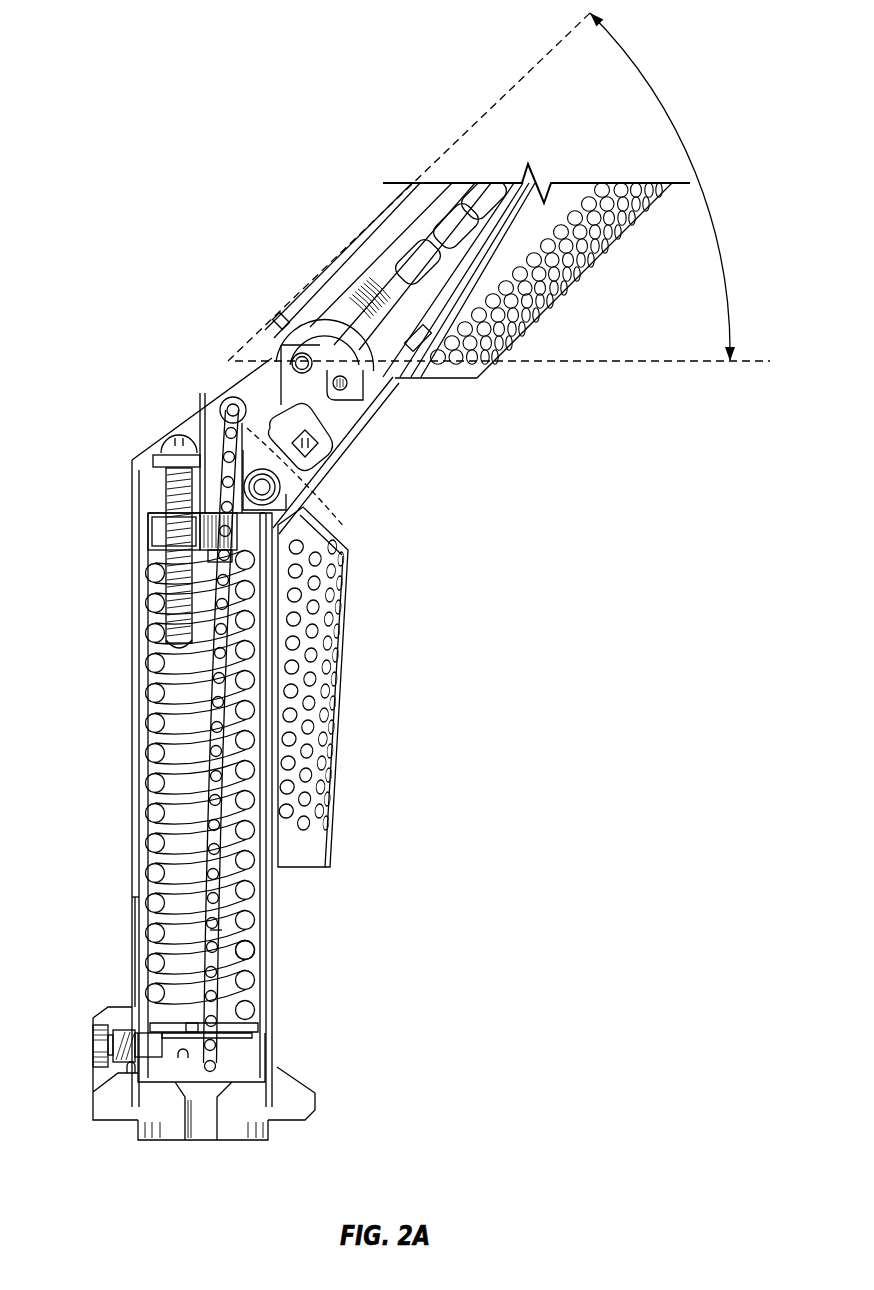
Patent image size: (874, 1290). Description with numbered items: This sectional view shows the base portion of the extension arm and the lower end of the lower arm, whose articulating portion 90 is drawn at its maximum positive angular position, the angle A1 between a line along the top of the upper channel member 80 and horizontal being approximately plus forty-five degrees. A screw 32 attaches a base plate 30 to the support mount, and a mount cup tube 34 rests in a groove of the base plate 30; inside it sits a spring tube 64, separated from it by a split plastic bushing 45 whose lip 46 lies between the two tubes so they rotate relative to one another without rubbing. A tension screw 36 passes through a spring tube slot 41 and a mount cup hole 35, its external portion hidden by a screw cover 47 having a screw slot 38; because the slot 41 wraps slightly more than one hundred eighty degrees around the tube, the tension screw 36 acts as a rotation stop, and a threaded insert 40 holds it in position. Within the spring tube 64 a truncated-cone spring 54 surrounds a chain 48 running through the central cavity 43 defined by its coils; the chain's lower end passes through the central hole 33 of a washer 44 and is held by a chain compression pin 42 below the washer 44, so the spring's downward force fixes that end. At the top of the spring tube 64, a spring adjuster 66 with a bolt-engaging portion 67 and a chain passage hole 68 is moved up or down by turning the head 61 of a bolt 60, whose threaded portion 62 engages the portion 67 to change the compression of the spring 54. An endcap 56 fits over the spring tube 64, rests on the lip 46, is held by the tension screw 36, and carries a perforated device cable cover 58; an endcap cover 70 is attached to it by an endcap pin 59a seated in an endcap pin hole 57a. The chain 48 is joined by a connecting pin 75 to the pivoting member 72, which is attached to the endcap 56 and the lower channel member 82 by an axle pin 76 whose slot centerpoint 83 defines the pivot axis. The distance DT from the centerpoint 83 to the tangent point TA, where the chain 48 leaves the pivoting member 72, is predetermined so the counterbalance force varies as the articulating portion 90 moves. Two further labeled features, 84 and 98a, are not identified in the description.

The articulating portion 90 is at (331, 196).
The upper channel member 80 is at (337, 275).
The perforated screen 84 is at (533, 301).
The lower channel member 82 is at (391, 372).
The pivot pin 98a is at (298, 356).
The pivoting member 72 is at (268, 356).
The endcap cover 70 is at (281, 378).
The connecting pin 75 is at (232, 408).
The tangent point TA is at (231, 428).
The head 61 is at (163, 446).
The bolt 60 is at (168, 472).
The bolt-engaging portion 67 is at (166, 522).
The spring adjuster 66 is at (150, 540).
The threaded portion 62 is at (155, 586).
The spring 54 is at (248, 956).
The endcap 56 is at (133, 640).
The spring tube 64 is at (146, 692).
The lip 46 is at (133, 896).
The bushing 45 is at (134, 918).
The central cavity 43 is at (229, 740).
The chain 48 is at (219, 936).
The device cable cover 58 is at (330, 666).
The chain passage hole 68 is at (254, 530).
The distance DT is at (314, 486).
The axle pin 76 is at (299, 458).
The centerpoint 83 is at (313, 447).
The endcap pin 59a is at (343, 389).
The endcap pin hole 57a is at (341, 391).
The central hole 33 is at (192, 1024).
The washer 44 is at (253, 1028).
The chain compression pin 42 is at (240, 1036).
The mount cup tube 34 is at (272, 1060).
The spring tube slot 41 is at (184, 1056).
The screw 32 is at (198, 1130).
The base plate 30 is at (118, 1118).
The screw cover 47 is at (112, 1006).
The screw slot 38 is at (95, 1030).
The tension screw 36 is at (112, 1046).
The threaded insert 40 is at (114, 1052).
The mount cup hole 35 is at (128, 1073).
The articulating portion angle A1 is at (706, 176).